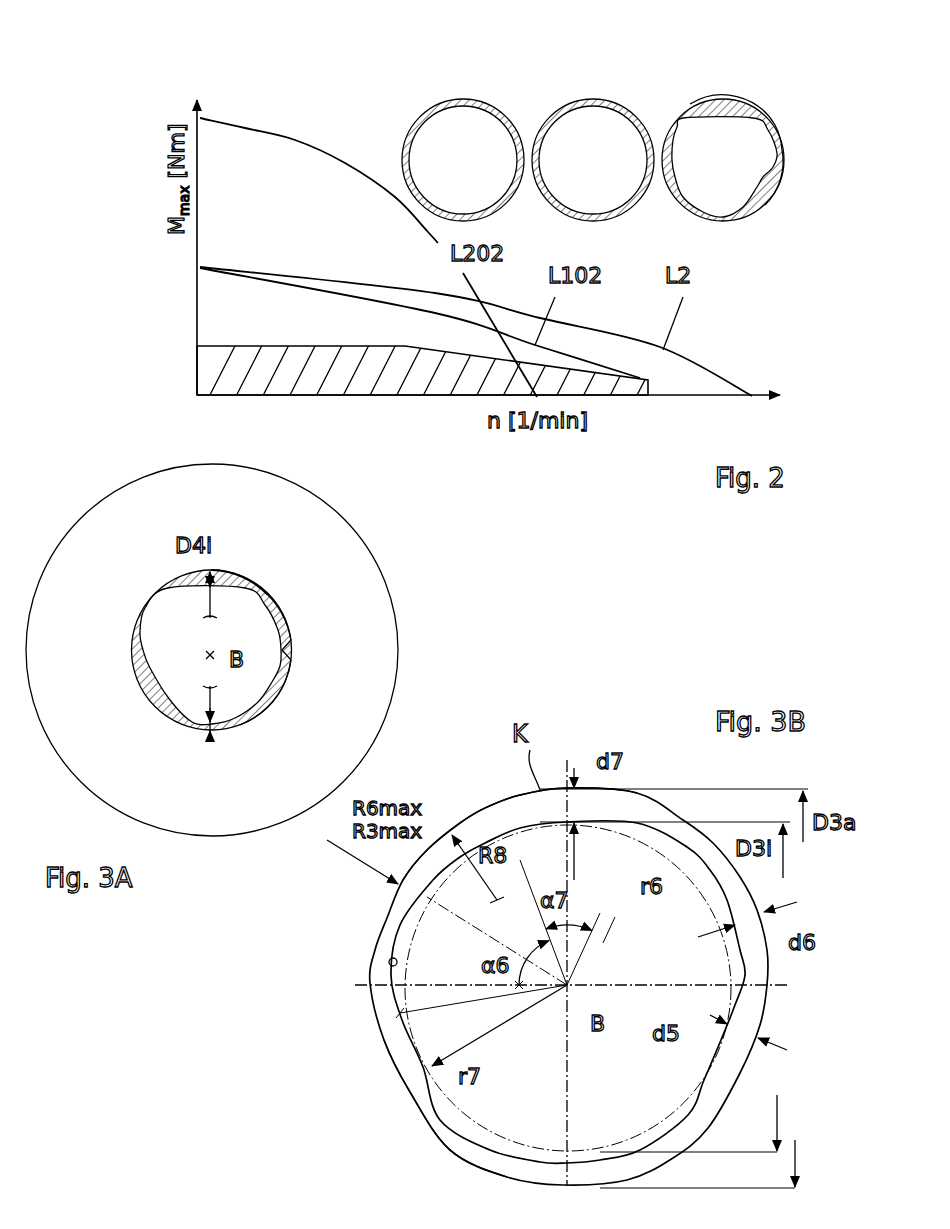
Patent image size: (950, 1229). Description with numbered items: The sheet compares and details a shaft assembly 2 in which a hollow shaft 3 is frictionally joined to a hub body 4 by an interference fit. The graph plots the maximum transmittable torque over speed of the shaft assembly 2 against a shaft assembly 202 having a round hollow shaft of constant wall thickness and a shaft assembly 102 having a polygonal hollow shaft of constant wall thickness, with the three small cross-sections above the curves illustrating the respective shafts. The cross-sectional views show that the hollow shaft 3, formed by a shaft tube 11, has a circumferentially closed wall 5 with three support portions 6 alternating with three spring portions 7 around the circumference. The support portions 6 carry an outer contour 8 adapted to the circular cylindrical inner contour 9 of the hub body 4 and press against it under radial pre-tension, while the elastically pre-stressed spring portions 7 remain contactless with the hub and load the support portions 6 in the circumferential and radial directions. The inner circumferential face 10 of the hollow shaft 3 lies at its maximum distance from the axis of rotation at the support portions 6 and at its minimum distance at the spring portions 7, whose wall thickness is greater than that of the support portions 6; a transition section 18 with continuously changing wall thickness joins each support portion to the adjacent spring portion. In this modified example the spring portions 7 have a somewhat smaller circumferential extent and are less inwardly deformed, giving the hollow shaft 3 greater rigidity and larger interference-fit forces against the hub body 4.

In FIG. 2, the shaft assembly with round hollow shaft of constant wall thickness 202 is at (463, 97).
In FIG. 2, the shaft assembly with polygonal hollow shaft of constant wall thickness 102 is at (593, 97).
In FIG. 2, the shaft assembly 2 is at (723, 97).
In FIG. 3A, the shaft assembly 2 is at (96, 468).
In FIG. 2, the hollow shaft 3 is at (771, 114).
In FIG. 3A, the hollow shaft 3 is at (283, 593).
In FIG. 3B, the hollow shaft 3 is at (596, 722).
In FIG. 3A, the hub body 4 is at (145, 470).
In FIG. 3B, the wall 5 is at (453, 1139).
In FIG. 2, the support portions 6 is at (779, 136).
In FIG. 3A, the support portions 6 is at (286, 622).
In FIG. 3B, the support portions 6 is at (386, 913).
In FIG. 2, the spring portions 7 is at (768, 190).
In FIG. 3A, the spring portions 7 is at (286, 688).
In FIG. 3B, the spring portions 7 is at (400, 1073).
In FIG. 3A, the outer contour 8 is at (252, 582).
In FIG. 3B, the outer contour 8 is at (453, 818).
In FIG. 3A, the inner contour 9 is at (293, 664).
In FIG. 3A, the inner circumferential face 10 is at (292, 637).
In FIG. 3B, the inner circumferential face 10 is at (388, 965).
In FIG. 3B, the shaft tube 11 is at (578, 735).
In FIG. 3B, the transition section 18 is at (393, 1036).